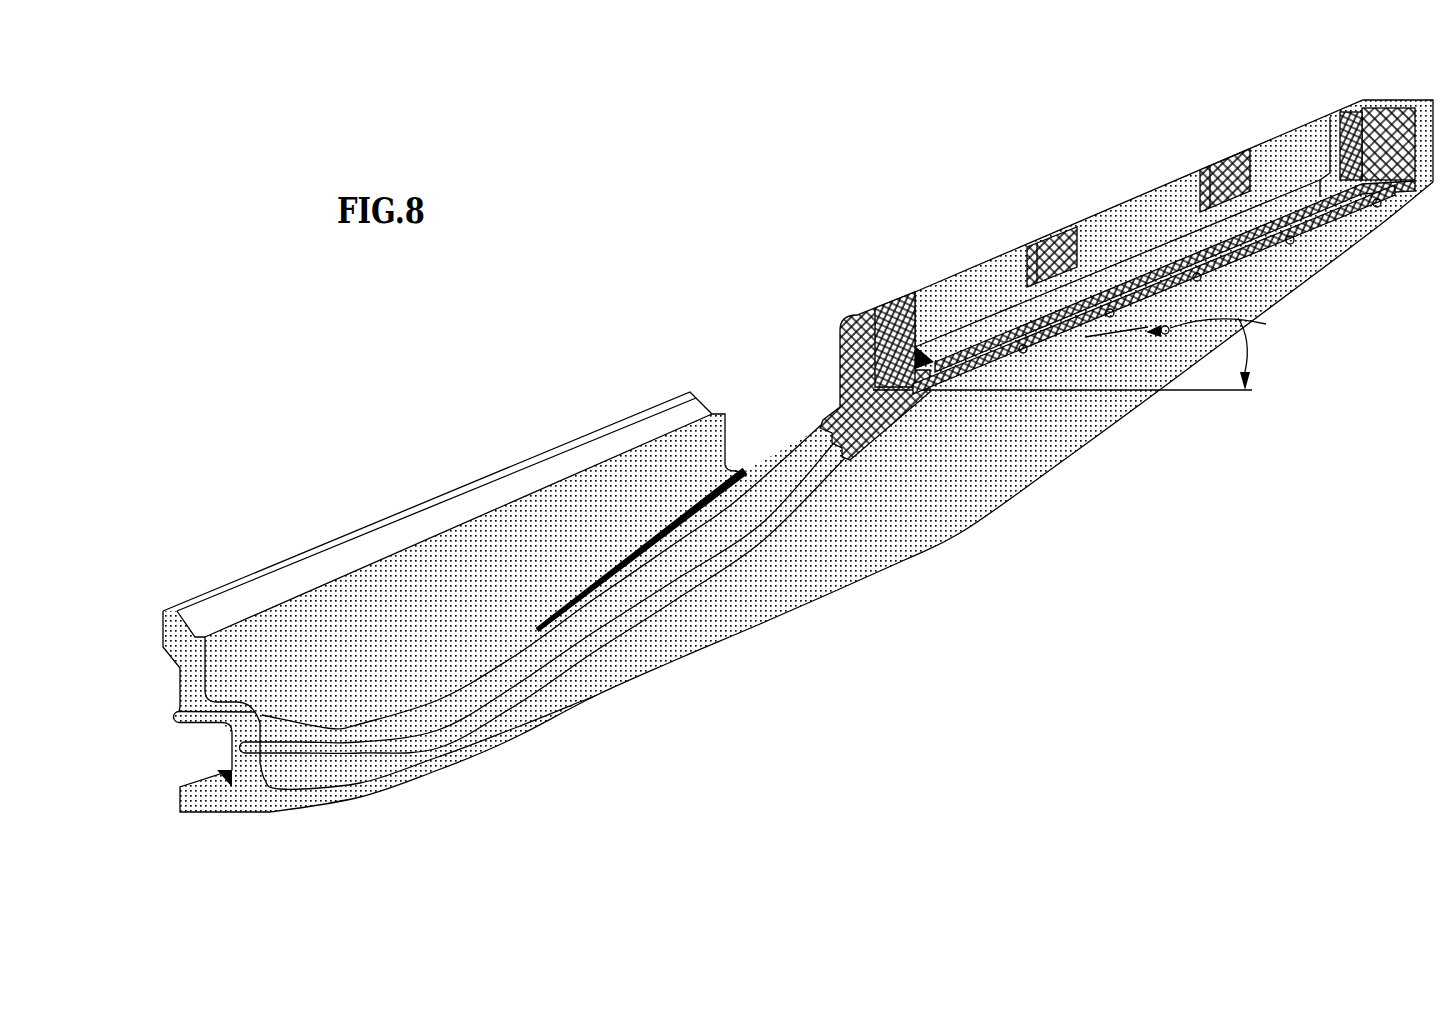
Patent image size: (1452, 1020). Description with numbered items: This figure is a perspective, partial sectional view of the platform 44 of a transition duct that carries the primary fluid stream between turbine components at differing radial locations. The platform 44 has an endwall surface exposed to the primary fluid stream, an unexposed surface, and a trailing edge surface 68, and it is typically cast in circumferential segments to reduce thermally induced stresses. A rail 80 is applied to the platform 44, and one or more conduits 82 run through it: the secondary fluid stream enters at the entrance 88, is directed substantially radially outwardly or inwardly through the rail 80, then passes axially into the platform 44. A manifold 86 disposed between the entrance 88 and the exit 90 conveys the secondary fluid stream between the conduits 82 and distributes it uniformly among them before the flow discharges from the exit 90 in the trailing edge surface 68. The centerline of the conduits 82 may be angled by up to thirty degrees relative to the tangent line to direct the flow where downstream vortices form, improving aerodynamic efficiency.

The platform 44 is at (657, 362).
The trailing edge surface 68 is at (933, 397).
The rail 80 is at (873, 312).
The conduits 82 is at (1130, 227).
The manifold 86 is at (988, 328).
The entrance 88 is at (1203, 170).
The exit 90 is at (1292, 244).